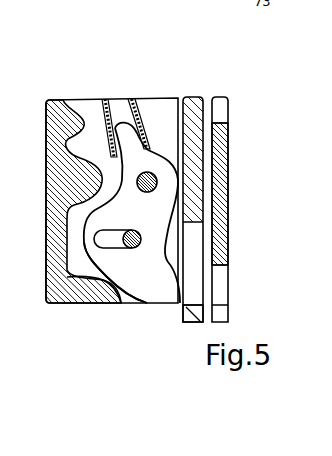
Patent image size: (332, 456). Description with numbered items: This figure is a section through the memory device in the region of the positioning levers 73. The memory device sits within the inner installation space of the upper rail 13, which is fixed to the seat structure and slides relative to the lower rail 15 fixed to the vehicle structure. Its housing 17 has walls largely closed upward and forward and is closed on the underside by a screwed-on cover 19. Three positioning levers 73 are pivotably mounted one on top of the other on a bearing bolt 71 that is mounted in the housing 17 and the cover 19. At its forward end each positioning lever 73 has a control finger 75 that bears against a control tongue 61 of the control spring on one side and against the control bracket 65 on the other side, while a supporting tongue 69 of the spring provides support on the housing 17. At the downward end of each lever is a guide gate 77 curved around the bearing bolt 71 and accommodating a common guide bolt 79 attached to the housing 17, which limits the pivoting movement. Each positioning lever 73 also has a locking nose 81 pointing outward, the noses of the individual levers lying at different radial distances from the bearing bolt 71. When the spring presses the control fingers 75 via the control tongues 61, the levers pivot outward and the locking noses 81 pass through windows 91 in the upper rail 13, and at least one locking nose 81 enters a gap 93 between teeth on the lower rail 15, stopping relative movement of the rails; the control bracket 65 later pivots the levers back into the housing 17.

The upper rail 13 is at (188, 323).
The lower rail 15 is at (228, 152).
The housing 17 is at (53, 100).
The cover 19 is at (90, 153).
The control tongues 61 is at (142, 100).
The control bracket 65 is at (104, 99).
The supporting tongue 69 is at (297, 7).
The bearing bolt 71 is at (184, 97).
The positioning levers 73 is at (151, 168).
The control finger 75 is at (115, 122).
The guide gate 77 is at (57, 305).
The guide bolt 79 is at (118, 247).
The locking nose 81 is at (160, 283).
The windows 91 is at (172, 290).
The gap 93 is at (222, 290).